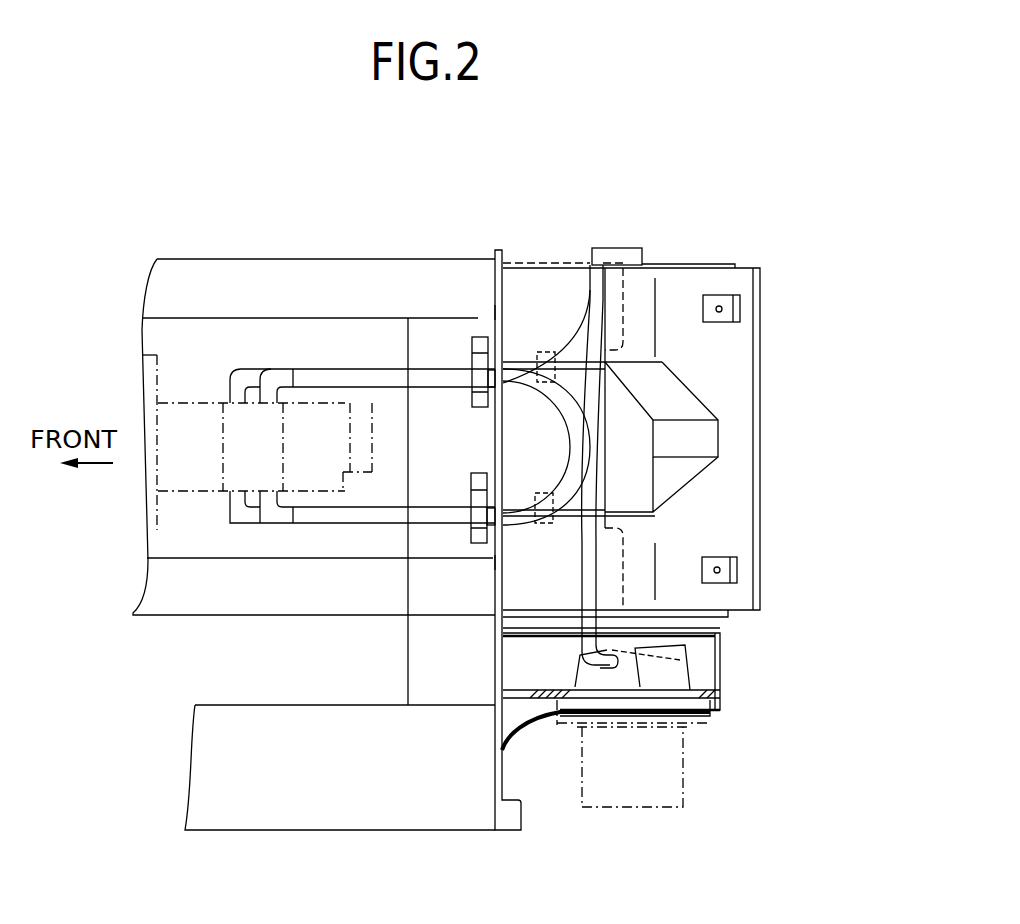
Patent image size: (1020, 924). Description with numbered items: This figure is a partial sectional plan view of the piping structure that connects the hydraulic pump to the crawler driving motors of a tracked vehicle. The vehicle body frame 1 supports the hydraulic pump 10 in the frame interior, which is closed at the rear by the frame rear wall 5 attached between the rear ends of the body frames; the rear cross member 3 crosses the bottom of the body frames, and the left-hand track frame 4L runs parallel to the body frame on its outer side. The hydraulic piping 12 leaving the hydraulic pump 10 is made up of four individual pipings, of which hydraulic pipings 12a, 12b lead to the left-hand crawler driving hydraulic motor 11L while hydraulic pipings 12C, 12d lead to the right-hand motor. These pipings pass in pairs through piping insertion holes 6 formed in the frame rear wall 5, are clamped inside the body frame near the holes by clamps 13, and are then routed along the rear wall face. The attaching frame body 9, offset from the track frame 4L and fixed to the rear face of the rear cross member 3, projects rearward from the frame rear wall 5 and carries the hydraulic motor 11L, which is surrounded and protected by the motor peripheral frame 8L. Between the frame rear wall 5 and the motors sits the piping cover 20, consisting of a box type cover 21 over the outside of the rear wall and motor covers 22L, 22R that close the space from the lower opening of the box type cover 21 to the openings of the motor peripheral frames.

The vehicle body frame 1 is at (158, 590).
The rear cross member 3 is at (408, 668).
The left-hand track frame 4L is at (195, 750).
The frame rear wall 5 is at (492, 447).
The piping insertion hole 6 is at (495, 310).
The motor peripheral frame 8L is at (722, 660).
The attaching frame body 9 is at (517, 697).
The hydraulic pump 10 is at (194, 400).
The left-hand crawler driving hydraulic motor 11L is at (630, 808).
The hydraulic piping 12 is at (626, 422).
The hydraulic piping 12a is at (570, 545).
The hydraulic piping 12b is at (595, 485).
The hydraulic piping 12C is at (590, 295).
The hydraulic piping 12d is at (640, 388).
The clamp 13 is at (478, 340).
The piping cover 20 is at (679, 416).
The box type cover 21 is at (737, 430).
The motor cover 22R is at (540, 290).
The motor cover 22L is at (553, 582).